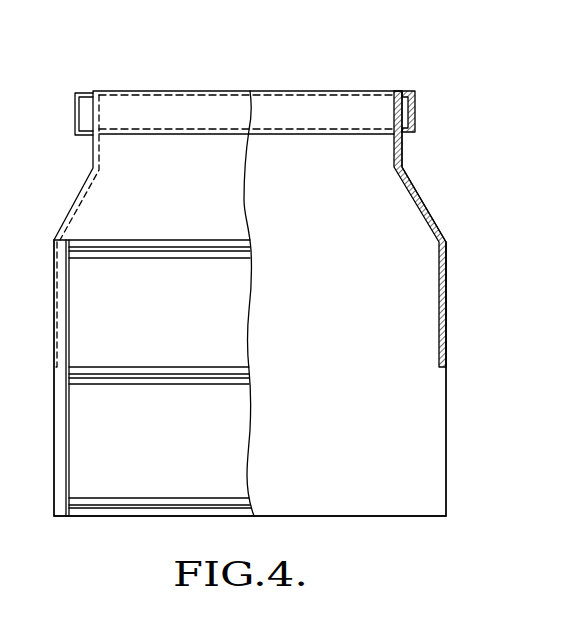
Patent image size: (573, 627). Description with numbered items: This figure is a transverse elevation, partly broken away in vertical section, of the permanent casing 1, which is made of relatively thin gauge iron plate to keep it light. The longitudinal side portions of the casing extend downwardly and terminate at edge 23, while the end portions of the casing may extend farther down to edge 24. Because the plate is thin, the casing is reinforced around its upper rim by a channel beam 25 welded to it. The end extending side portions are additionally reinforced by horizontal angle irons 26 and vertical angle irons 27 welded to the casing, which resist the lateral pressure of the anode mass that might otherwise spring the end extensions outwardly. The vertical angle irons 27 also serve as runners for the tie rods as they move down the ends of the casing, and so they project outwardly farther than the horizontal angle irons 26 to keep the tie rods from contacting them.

The permanent casing 1 is at (65, 206).
The edge 23 is at (442, 373).
The edge 24 is at (332, 517).
The channel beam 25 is at (383, 103).
The horizontal angle irons 26 is at (158, 255).
The vertical angle irons 27 is at (60, 435).